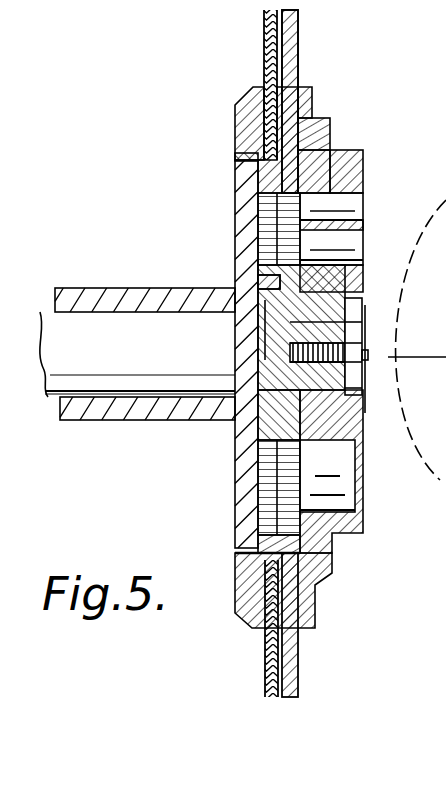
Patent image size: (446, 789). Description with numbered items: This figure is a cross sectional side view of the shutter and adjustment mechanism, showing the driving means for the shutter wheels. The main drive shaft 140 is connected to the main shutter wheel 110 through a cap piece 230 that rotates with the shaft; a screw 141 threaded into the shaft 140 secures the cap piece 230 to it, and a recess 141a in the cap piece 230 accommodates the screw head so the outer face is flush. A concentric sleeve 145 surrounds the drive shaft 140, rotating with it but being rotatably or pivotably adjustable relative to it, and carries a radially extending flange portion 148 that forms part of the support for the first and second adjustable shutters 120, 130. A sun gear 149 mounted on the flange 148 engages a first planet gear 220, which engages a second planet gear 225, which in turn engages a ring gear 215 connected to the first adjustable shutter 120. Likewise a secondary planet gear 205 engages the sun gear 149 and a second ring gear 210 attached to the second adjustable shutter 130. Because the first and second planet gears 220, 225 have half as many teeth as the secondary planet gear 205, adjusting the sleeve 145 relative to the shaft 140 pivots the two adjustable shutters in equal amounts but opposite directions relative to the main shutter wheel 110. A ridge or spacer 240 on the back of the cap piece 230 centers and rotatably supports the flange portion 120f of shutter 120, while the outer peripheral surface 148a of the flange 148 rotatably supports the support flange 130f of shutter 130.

The main shutter wheel 110 is at (290, 50).
The first adjustable shutter 120 is at (298, 28).
The flange portion of shutter 120 120f is at (312, 118).
The second adjustable shutter 130 is at (262, 28).
The support flange of shutter 130 130f is at (252, 103).
The main drive shaft 140 is at (90, 362).
The screw 141 is at (364, 338).
The recess 141a is at (348, 302).
The concentric sleeve 145 is at (126, 290).
The flange portion 148 is at (250, 192).
The outer peripheral surface 148a is at (238, 140).
The sun gear 149 is at (262, 283).
The secondary planet gear 205 is at (242, 494).
The second ring gear 210 is at (262, 532).
The ring gear 215 is at (300, 188).
The first planet gear 220 is at (305, 246).
The second planet gear 225 is at (335, 176).
The cap piece 230 is at (348, 435).
The ridge or spacer 240 is at (300, 165).